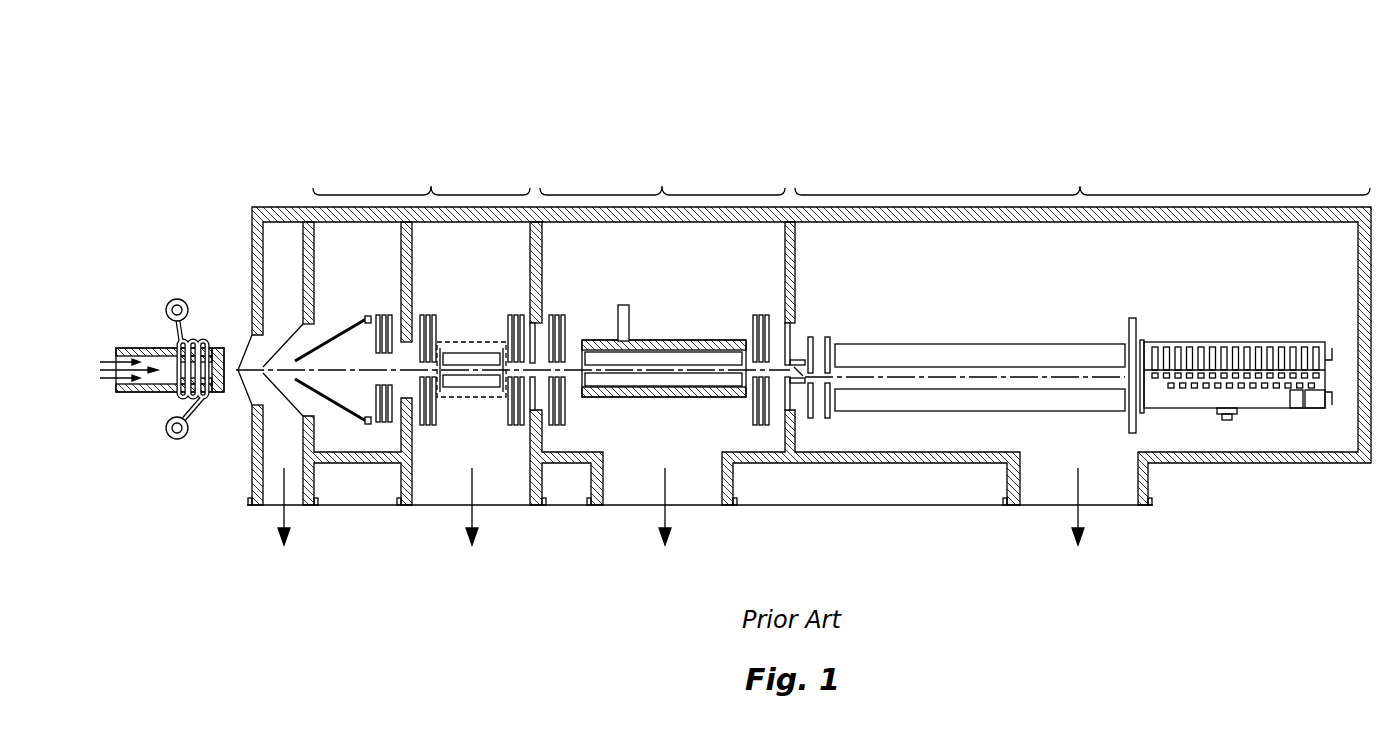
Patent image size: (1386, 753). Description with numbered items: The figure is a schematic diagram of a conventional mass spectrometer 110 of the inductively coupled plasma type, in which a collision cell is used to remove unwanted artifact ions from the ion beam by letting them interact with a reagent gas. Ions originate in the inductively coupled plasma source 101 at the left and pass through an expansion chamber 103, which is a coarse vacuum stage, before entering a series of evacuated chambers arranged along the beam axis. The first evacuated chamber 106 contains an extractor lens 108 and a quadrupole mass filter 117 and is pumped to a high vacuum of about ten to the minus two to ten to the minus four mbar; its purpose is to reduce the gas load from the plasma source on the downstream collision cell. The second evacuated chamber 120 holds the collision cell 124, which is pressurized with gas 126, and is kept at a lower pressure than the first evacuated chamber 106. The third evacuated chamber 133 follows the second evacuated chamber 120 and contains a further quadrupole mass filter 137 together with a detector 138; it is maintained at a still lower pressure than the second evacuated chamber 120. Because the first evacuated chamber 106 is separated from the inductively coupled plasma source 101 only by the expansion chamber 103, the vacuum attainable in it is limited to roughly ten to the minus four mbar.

The inductively coupled plasma source 101 is at (176, 299).
The expansion chamber 103 is at (247, 386).
The first evacuated chamber 106 is at (421, 290).
The extractor lens 108 is at (343, 331).
The mass spectrometer 110 is at (1086, 106).
The quadrupole mass filter 117 is at (473, 342).
The second evacuated chamber 120 is at (662, 290).
The collision cell 124 is at (687, 340).
The gas 126 is at (623, 313).
The third evacuated chamber 133 is at (1080, 294).
The quadrupole mass filter 137 is at (988, 343).
The detector 138 is at (1239, 343).